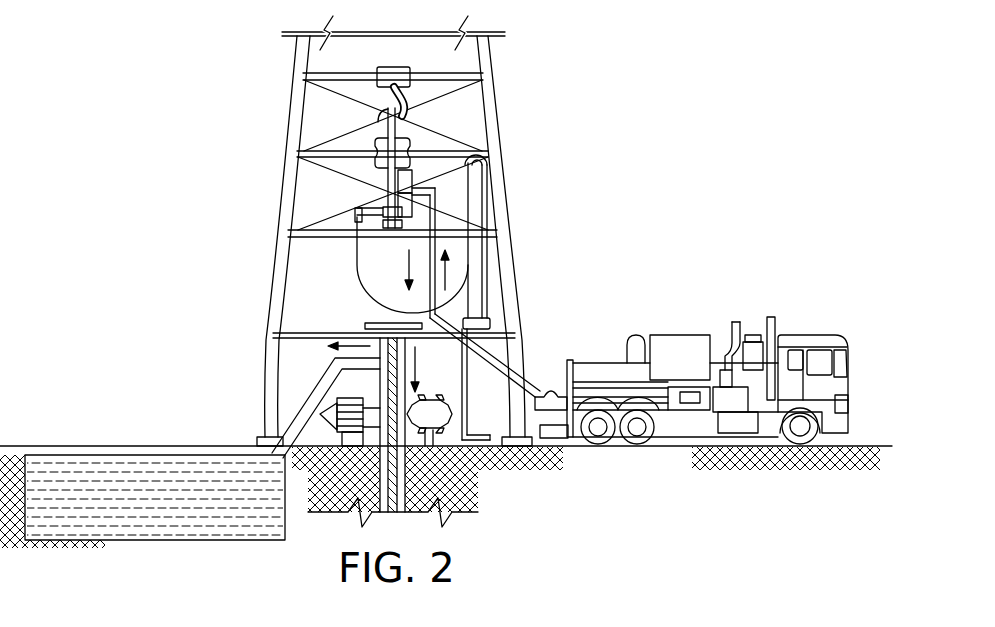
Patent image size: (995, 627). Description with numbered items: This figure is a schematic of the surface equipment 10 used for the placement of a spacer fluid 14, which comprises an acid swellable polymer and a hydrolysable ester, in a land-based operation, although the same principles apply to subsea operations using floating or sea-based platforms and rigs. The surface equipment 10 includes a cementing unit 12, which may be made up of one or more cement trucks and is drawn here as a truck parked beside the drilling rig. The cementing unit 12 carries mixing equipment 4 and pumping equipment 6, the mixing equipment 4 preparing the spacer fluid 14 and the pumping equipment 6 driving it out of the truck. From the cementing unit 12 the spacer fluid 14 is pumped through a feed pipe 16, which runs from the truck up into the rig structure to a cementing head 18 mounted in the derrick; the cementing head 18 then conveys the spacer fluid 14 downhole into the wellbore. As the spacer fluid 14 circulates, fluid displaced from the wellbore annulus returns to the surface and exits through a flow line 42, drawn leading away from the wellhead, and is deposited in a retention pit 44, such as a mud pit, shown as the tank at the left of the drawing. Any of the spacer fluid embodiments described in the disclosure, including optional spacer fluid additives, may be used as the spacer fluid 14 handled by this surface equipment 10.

The surface equipment 10 is at (83, 68).
The cementing head 18 is at (427, 141).
The spacer fluid 14 is at (408, 266).
The feed pipe 16 is at (476, 360).
The pumping equipment 6 is at (553, 388).
The cementing unit 12 is at (695, 390).
The mixing equipment 4 is at (690, 405).
The flow line 42 is at (305, 398).
The retention pit 44 is at (170, 510).